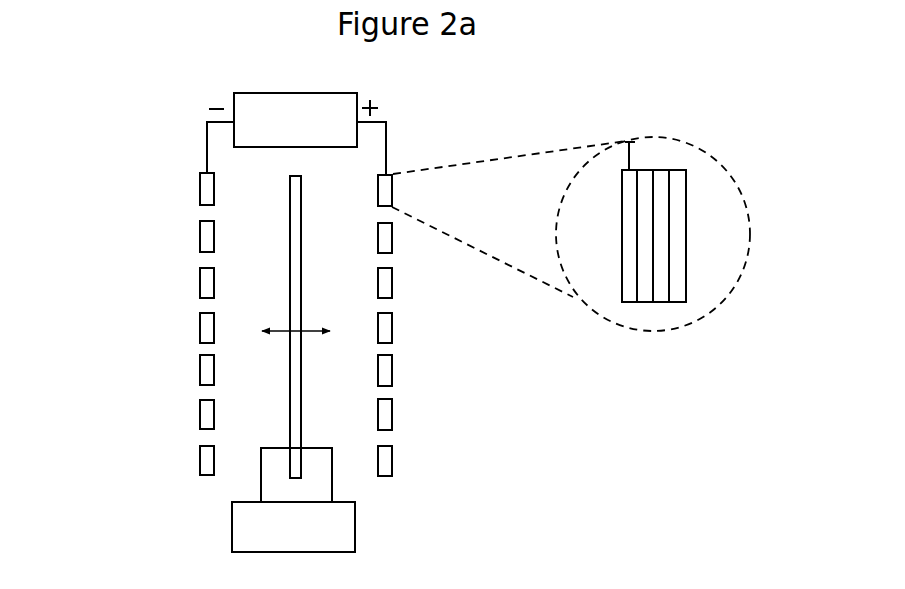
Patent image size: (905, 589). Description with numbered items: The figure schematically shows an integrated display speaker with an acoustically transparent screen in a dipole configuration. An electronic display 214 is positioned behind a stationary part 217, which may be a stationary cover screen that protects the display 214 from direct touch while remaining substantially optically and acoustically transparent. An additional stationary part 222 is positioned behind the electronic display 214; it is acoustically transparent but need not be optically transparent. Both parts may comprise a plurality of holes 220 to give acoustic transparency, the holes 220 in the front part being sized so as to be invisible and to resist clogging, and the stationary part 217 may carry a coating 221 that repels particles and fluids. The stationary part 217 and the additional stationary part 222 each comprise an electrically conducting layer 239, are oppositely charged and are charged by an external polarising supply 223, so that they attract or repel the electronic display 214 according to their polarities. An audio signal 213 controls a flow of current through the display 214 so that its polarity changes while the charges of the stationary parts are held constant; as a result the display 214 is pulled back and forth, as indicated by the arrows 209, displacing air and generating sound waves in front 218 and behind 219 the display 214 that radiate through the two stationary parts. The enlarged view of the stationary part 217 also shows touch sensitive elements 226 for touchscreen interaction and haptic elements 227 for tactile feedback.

The external polarising supply 223 is at (266, 107).
The rear of the electronic display 219 is at (173, 295).
The front of the electronic display 218 is at (409, 296).
The additional stationary part 222 is at (208, 190).
The holes 220 is at (205, 351).
The stationary part 217 is at (385, 283).
The arrows 209 is at (262, 331).
The electronic display 214 is at (295, 390).
The audio signal 213 is at (338, 522).
The coating 221 is at (677, 183).
The electrically conducting layer 239 is at (628, 290).
The haptic elements 227 is at (647, 290).
The touch sensitive elements 226 is at (662, 288).